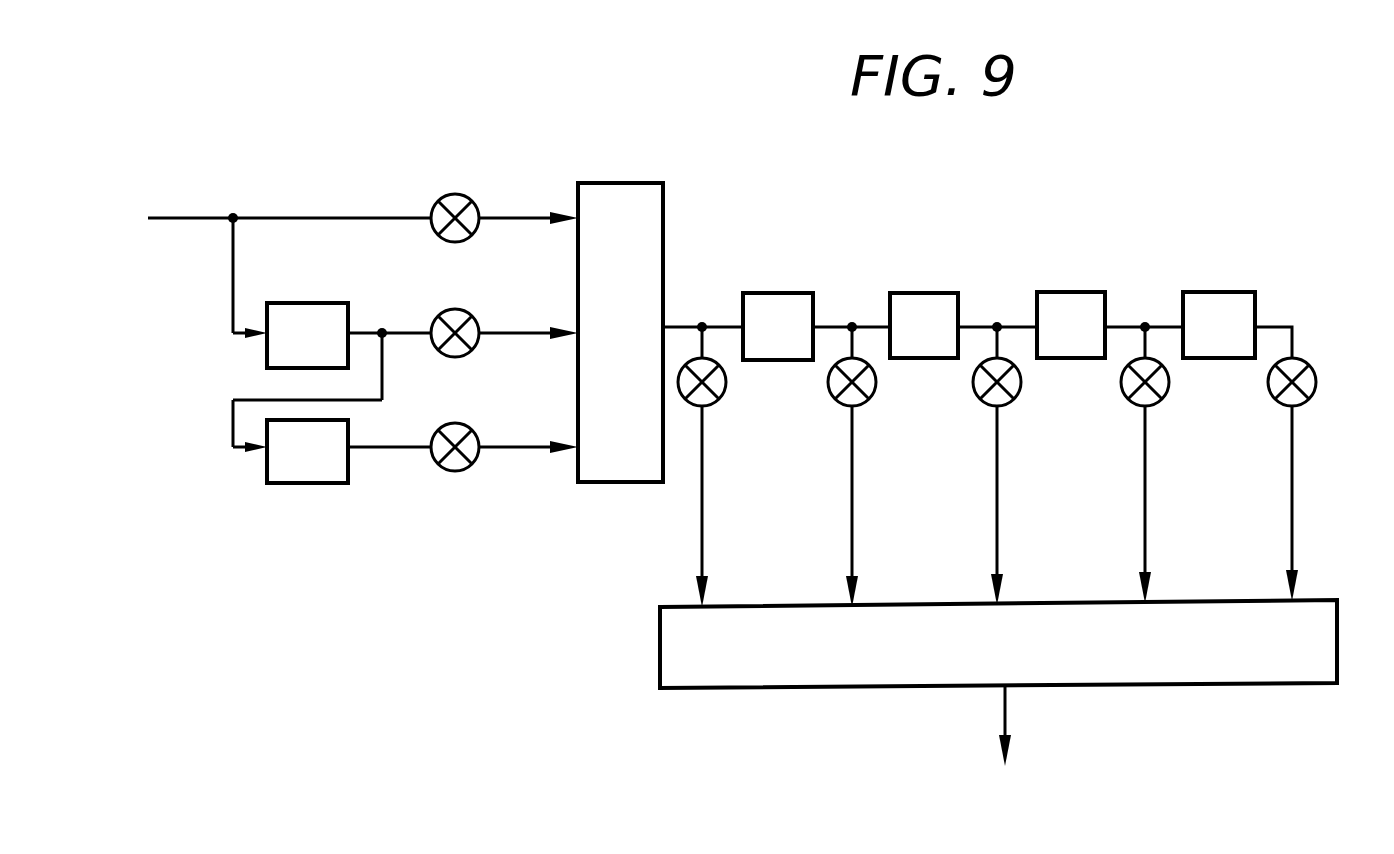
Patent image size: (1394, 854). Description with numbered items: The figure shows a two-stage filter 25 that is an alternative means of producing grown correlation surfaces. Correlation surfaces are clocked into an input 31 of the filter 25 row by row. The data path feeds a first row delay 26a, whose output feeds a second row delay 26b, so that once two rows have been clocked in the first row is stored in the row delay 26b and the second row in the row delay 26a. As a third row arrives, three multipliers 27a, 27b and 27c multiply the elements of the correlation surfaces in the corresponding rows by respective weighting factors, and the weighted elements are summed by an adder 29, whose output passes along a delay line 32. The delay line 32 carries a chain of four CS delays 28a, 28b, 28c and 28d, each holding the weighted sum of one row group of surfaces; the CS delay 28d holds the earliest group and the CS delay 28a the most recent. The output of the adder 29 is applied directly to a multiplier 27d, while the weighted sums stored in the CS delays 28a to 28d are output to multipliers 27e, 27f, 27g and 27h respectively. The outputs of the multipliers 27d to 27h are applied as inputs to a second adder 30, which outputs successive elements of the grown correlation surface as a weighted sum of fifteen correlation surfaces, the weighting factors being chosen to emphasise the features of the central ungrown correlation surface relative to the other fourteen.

The two-stage filter 25 is at (580, 562).
The row delay 26a is at (265, 360).
The row delay 26b is at (282, 485).
The multiplier 27a is at (458, 193).
The multiplier 27b is at (440, 312).
The multiplier 27c is at (460, 425).
The multiplier 27d is at (725, 395).
The multiplier 27e is at (875, 395).
The multiplier 27f is at (1020, 395).
The multiplier 27g is at (1168, 395).
The multiplier 27h is at (1312, 395).
The CS delay 28a is at (808, 293).
The CS delay 28b is at (925, 293).
The CS delay 28c is at (1090, 292).
The CS delay 28d is at (1240, 292).
The adder 29 is at (632, 183).
The adder 30 is at (793, 690).
The input 31 is at (157, 222).
The delay line 32 is at (975, 320).